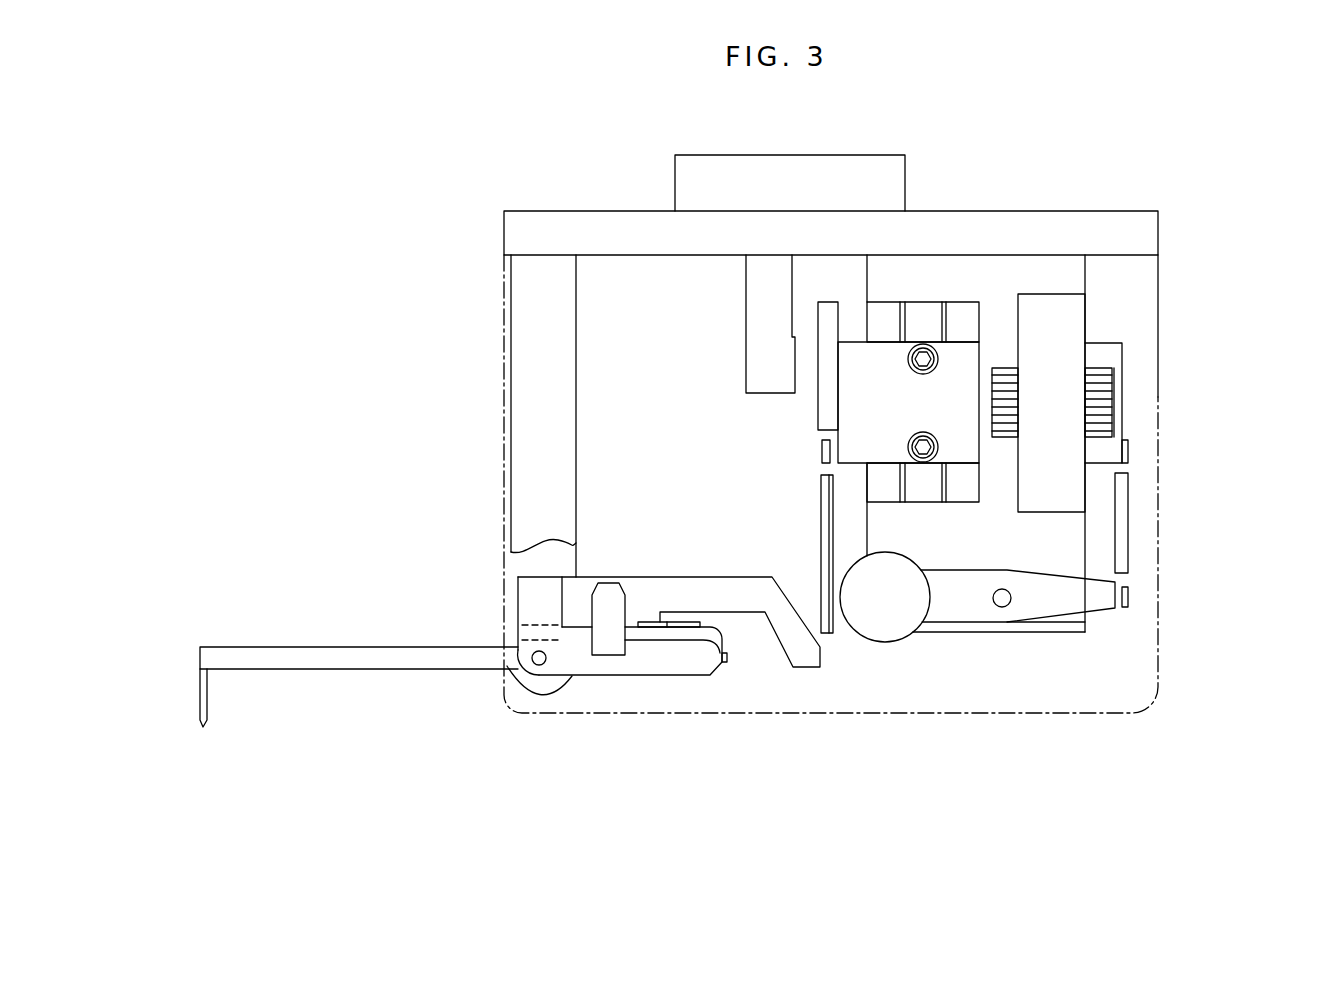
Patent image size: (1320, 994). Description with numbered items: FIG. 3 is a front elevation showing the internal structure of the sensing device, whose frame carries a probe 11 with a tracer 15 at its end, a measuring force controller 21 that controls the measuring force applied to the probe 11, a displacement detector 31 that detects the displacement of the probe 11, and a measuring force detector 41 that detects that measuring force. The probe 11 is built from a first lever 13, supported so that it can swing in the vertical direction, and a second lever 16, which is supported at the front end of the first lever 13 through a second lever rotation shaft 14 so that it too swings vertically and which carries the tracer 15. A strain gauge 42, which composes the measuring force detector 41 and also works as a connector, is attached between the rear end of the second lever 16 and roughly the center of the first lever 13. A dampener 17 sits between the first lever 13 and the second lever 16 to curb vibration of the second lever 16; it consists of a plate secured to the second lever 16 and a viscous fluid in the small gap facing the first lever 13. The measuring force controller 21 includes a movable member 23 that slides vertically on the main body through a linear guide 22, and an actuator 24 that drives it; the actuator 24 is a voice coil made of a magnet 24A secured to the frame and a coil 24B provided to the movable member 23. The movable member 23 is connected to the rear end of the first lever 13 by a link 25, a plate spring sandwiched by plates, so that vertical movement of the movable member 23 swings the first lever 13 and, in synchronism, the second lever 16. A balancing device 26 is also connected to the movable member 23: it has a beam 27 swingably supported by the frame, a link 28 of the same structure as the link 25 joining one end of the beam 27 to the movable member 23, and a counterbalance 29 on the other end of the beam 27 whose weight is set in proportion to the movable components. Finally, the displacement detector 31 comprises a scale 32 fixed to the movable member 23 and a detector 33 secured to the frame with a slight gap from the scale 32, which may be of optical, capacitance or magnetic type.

The probe 11 is at (472, 776).
The first lever 13 is at (672, 578).
The second lever rotation shaft 14 is at (539, 665).
The tracer 15 is at (214, 700).
The second lever 16 is at (382, 670).
The dampener 17 is at (607, 595).
The measuring force controller 21 is at (1076, 187).
The linear guide 22 is at (926, 313).
The movable member 23 is at (960, 362).
The actuator 24 is at (1265, 318).
The magnet 24A is at (1070, 324).
The coil 24B is at (1112, 385).
The link 25 is at (822, 508).
The balancing device 26 is at (1148, 802).
The beam 27 is at (1040, 607).
The link 28 is at (1128, 565).
The counterbalance 29 is at (890, 628).
The displacement detector 31 is at (712, 402).
The scale 32 is at (818, 418).
The detector 33 is at (759, 357).
The measuring force detector 41 is at (740, 774).
The strain gauge 42 is at (683, 638).